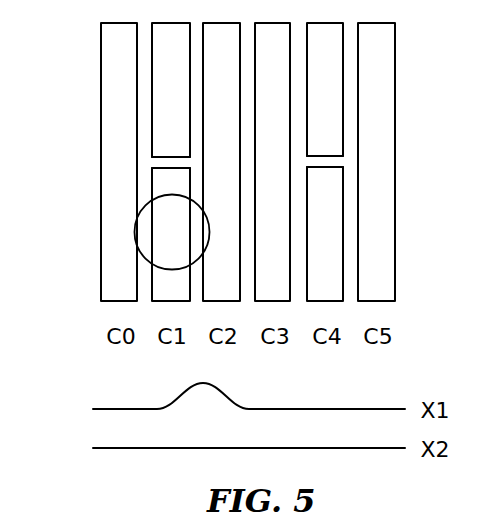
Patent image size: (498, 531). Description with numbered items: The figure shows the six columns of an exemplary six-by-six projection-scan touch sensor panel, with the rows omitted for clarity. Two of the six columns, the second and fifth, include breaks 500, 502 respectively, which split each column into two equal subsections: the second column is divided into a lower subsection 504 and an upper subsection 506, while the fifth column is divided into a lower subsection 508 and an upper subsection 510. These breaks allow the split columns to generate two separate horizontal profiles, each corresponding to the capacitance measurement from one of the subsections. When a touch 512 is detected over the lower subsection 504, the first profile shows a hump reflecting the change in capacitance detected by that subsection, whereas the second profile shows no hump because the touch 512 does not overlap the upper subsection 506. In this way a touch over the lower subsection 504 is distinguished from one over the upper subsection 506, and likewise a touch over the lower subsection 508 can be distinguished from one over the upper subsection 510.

The break 500 is at (168, 163).
The break 502 is at (327, 162).
The subsection C1a 504 is at (170, 287).
The subsection C1b 506 is at (168, 48).
The subsection C4a 508 is at (330, 273).
The subsection C4b 510 is at (327, 47).
The touch 512 is at (134, 232).